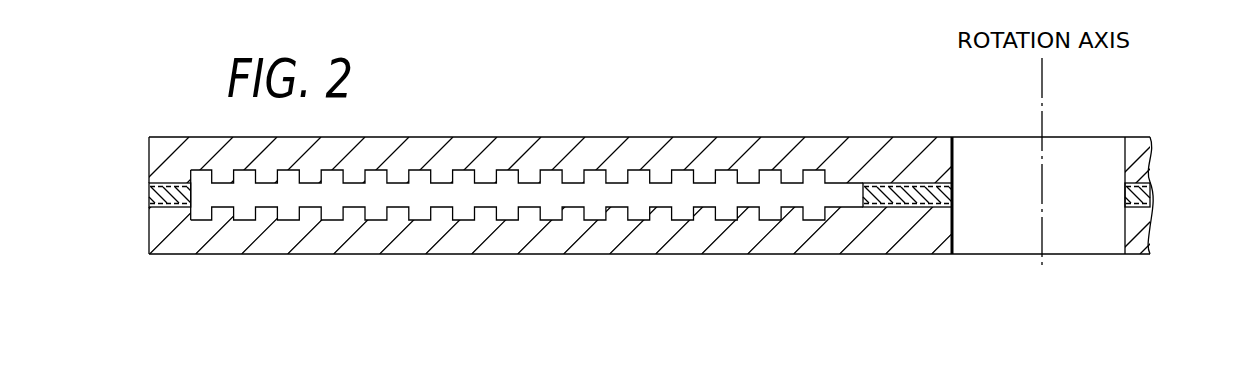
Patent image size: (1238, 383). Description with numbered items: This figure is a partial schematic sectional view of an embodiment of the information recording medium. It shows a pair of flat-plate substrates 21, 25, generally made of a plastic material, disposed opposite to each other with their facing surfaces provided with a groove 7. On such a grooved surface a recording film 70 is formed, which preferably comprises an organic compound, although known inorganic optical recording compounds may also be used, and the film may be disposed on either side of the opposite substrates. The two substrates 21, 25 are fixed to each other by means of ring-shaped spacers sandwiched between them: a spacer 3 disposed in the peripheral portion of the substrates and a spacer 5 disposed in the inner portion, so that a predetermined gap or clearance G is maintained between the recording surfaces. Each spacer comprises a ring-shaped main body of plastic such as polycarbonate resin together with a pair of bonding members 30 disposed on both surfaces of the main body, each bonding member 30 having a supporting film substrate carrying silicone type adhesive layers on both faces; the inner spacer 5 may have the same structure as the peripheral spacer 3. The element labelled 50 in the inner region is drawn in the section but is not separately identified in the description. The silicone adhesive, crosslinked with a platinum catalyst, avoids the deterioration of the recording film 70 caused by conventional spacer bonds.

The spacer 3 is at (146, 192).
The spacer 5 is at (958, 200).
The groove 7 is at (776, 177).
The substrate 21 is at (623, 155).
The substrate 25 is at (594, 243).
The bonding member 30 is at (166, 182).
The inner seal 50 is at (927, 173).
The recording film 70 is at (783, 178).
The gap channel G is at (507, 191).